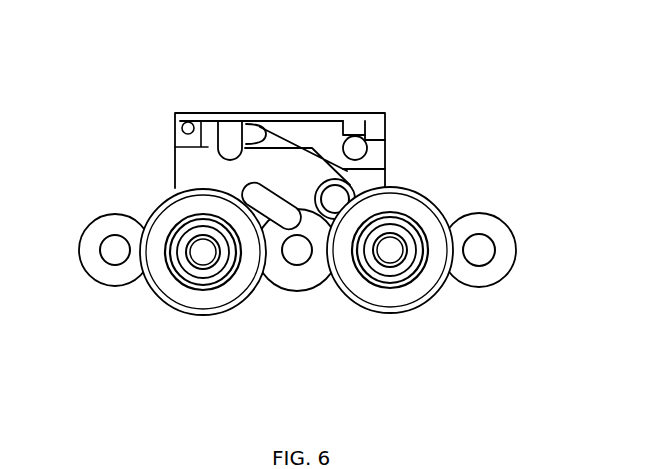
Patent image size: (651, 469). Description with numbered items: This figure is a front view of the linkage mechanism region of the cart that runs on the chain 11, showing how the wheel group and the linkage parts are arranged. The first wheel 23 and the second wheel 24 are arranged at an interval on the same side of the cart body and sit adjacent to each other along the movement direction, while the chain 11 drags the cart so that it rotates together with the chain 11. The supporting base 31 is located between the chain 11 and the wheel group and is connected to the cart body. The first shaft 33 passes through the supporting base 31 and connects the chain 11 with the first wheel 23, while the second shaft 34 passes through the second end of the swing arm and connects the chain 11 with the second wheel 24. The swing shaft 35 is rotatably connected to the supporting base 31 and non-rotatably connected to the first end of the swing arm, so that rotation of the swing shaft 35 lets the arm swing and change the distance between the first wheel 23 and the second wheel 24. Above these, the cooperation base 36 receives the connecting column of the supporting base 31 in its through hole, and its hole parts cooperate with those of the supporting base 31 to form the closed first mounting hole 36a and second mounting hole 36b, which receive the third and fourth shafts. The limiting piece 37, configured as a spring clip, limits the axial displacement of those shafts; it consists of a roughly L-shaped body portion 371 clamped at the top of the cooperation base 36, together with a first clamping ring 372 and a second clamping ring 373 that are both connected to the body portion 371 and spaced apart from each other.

The chain 11 is at (493, 224).
The first wheel 23 is at (200, 303).
The second wheel 24 is at (378, 297).
The supporting base 31 is at (193, 170).
The first shaft 33 is at (207, 250).
The second shaft 34 is at (388, 250).
The swing shaft 35 is at (334, 200).
The cooperation base 36 is at (377, 133).
The first mounting hole 36a is at (235, 147).
The second mounting hole 36b is at (355, 147).
The limiting piece 37 is at (301, 112).
The body portion 371 is at (257, 120).
The first clamping ring 372 is at (225, 153).
The second clamping ring 373 is at (359, 124).